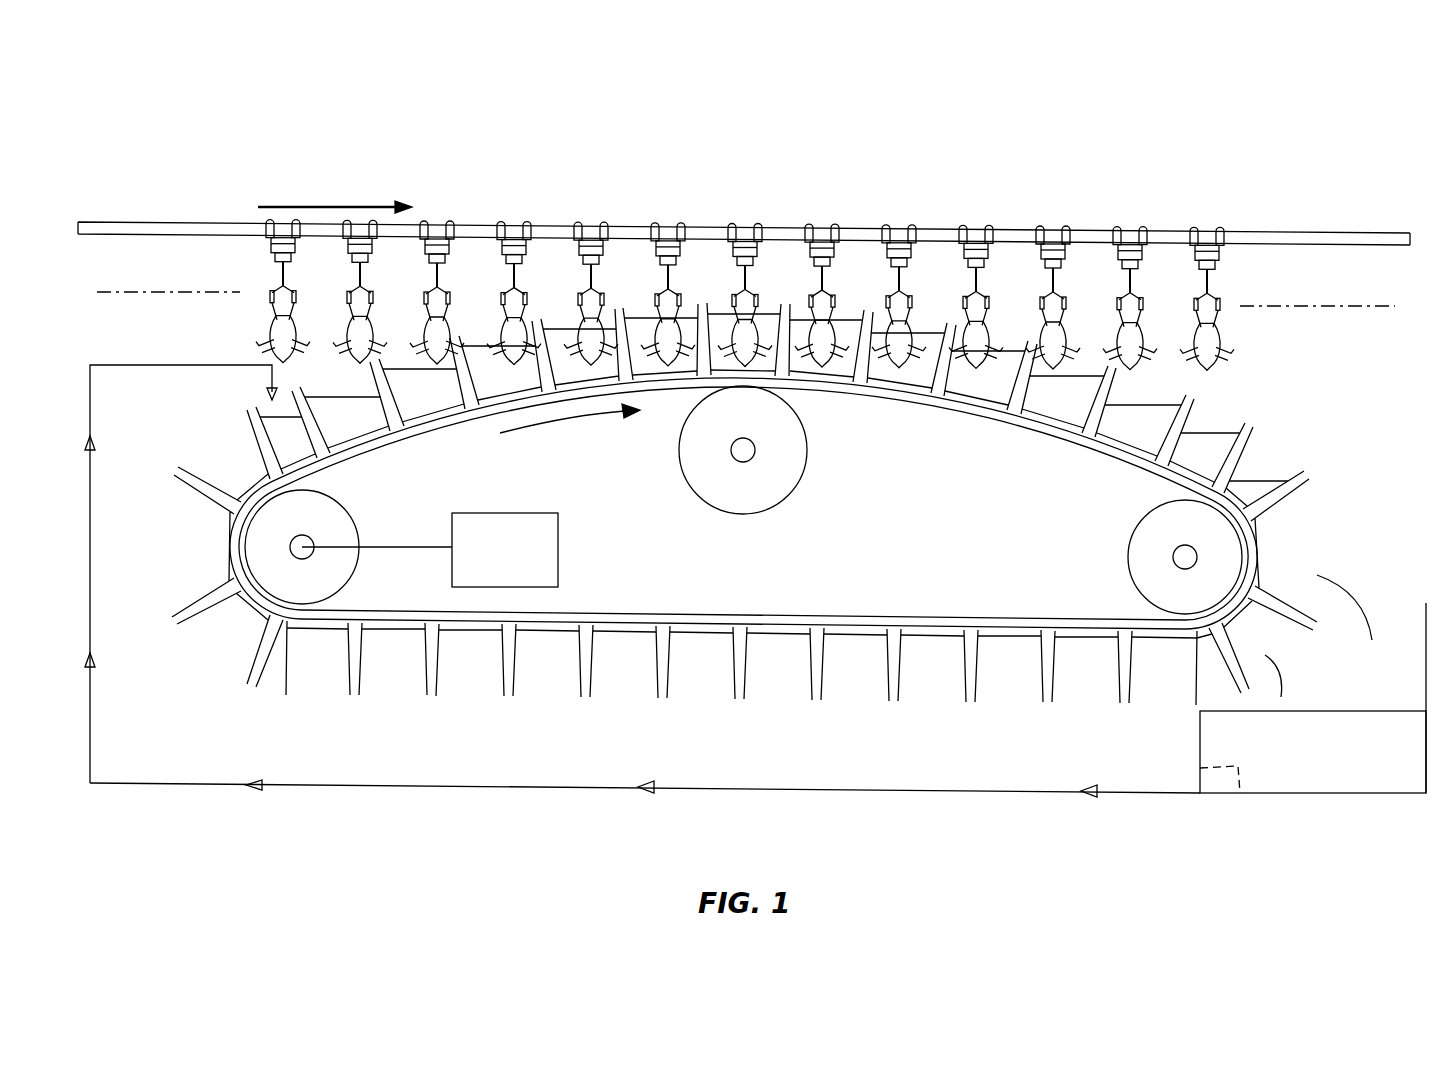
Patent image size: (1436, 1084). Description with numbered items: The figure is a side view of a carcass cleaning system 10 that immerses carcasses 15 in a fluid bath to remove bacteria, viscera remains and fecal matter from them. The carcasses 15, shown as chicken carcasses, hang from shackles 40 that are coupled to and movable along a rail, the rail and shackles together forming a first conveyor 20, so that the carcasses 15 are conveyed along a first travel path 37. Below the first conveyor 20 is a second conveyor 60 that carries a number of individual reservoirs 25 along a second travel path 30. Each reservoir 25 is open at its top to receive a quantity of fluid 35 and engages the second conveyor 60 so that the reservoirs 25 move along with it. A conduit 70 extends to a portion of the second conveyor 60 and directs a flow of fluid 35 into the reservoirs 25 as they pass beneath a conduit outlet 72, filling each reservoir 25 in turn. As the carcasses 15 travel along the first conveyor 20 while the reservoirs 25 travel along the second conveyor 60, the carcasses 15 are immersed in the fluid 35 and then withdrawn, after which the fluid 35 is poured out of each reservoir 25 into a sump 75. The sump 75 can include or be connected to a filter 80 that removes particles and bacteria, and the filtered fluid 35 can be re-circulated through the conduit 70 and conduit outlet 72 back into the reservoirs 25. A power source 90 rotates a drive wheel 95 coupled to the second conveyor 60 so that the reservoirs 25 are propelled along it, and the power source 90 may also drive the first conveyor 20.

The carcass cleaning system 10 is at (1312, 150).
The carcasses 15 is at (272, 340).
The first conveyor 20 is at (1352, 242).
The reservoirs 25 is at (158, 516).
The second travel path 30 is at (528, 432).
The fluid 35 is at (1196, 432).
The first travel path 37 is at (322, 198).
The shackles 40 is at (1210, 322).
The second conveyor 60 is at (1300, 524).
The conduit 70 is at (90, 622).
The conduit outlet 72 is at (266, 384).
The sump 75 is at (1348, 775).
The filter 80 is at (1240, 795).
The power source 90 is at (530, 562).
The drive wheel 95 is at (336, 526).